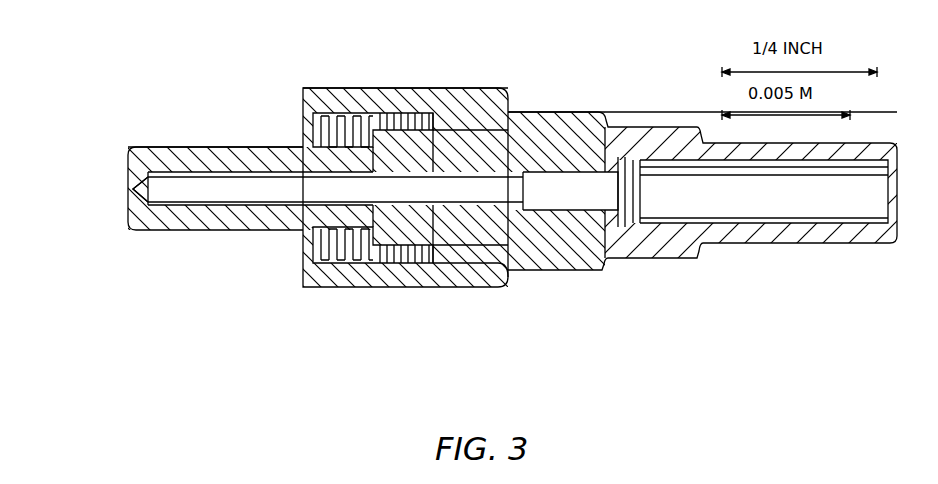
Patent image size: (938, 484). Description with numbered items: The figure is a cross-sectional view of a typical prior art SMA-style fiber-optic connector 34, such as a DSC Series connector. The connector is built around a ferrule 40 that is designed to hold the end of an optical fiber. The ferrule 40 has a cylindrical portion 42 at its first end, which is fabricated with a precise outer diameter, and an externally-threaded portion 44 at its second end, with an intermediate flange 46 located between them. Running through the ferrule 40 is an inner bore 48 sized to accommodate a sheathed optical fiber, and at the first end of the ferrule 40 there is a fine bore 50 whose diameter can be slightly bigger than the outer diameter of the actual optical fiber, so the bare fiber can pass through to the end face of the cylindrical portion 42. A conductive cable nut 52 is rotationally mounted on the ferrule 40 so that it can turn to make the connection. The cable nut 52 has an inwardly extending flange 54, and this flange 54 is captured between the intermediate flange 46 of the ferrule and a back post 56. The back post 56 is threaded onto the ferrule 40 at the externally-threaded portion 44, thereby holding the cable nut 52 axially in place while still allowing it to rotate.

The SMA-style fiber-optic connector 34 is at (680, 299).
The ferrule 40 is at (247, 133).
The cylindrical portion 42 is at (197, 148).
The externally-threaded portion 44 is at (634, 197).
The intermediate flange 46 is at (457, 130).
The inner bore 48 is at (243, 195).
The fine bore 50 is at (135, 186).
The conductive cable nut 52 is at (456, 88).
The inwardly extending flange 54 is at (495, 288).
The back post 56 is at (598, 118).